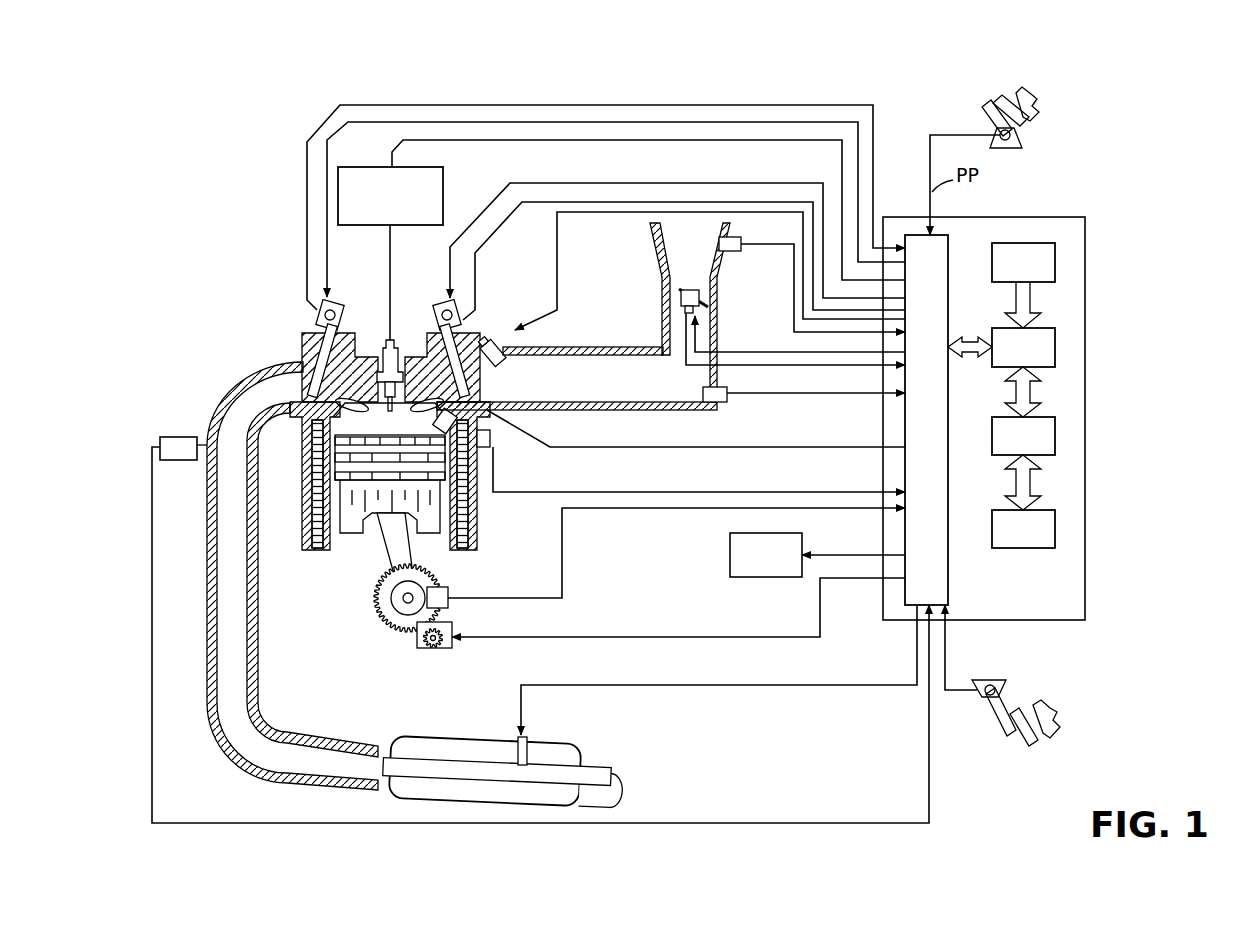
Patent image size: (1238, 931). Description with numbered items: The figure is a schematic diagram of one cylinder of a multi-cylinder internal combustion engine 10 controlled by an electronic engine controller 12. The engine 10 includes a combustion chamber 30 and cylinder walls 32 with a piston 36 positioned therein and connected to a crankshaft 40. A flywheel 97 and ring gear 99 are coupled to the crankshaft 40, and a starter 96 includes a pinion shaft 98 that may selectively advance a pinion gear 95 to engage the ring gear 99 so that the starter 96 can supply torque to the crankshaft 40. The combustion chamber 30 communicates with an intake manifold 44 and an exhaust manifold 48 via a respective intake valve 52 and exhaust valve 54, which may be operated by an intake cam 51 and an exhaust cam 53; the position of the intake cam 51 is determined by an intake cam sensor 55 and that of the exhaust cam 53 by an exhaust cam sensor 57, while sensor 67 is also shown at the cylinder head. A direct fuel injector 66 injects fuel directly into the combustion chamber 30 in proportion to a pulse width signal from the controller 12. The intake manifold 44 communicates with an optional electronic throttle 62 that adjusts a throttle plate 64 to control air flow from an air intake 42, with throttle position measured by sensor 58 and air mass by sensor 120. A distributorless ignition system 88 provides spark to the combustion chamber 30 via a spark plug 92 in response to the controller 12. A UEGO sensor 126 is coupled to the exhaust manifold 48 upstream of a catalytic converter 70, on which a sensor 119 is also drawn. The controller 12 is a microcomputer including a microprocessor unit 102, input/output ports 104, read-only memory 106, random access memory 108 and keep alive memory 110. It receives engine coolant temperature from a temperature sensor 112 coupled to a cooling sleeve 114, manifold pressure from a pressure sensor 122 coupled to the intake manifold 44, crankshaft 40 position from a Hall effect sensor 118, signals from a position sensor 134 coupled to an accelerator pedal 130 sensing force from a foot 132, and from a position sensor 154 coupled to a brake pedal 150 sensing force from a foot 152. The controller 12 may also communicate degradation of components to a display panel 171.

The internal combustion engine 10 is at (338, 324).
The electronic engine controller 12 is at (1077, 215).
The combustion chamber 30 is at (387, 422).
The cylinder walls 32 is at (337, 550).
The piston 36 is at (372, 510).
The crankshaft 40 is at (393, 623).
The air intake 42 is at (701, 267).
The intake manifold 44 is at (642, 394).
The exhaust manifold 48 is at (284, 397).
The intake cam 51 is at (441, 310).
The intake valve 52 is at (433, 387).
The exhaust cam 53 is at (337, 310).
The exhaust valve 54 is at (317, 377).
The intake cam sensor 55 is at (460, 322).
The exhaust cam sensor 57 is at (323, 320).
The throttle position sensor 58 is at (670, 316).
The electronic throttle 62 is at (703, 295).
The throttle plate 64 is at (673, 295).
The direct fuel injector 66 is at (470, 410).
The cylinder pressure sensor 67 is at (508, 332).
The catalytic converter 70 is at (403, 740).
The distributorless ignition system 88 is at (352, 167).
The spark plug 92 is at (391, 333).
The pinion gear 95 is at (442, 652).
The starter 96 is at (450, 648).
The flywheel 97 is at (383, 605).
The pinion shaft 98 is at (430, 650).
The ring gear 99 is at (407, 632).
The microprocessor unit 102 is at (1057, 340).
The input/output ports 104 is at (950, 242).
The read-only memory 106 is at (1057, 260).
The random access memory 108 is at (1057, 430).
The keep alive memory 110 is at (1057, 525).
The temperature sensor 112 is at (492, 442).
The cooling sleeve 114 is at (462, 510).
The Hall effect sensor 118 is at (448, 590).
The temperature sensor 119 is at (528, 742).
The air mass sensor 120 is at (738, 251).
The pressure sensor 122 is at (728, 403).
The Universal Exhaust Gas Oxygen sensor 126 is at (160, 440).
The accelerator pedal 130 is at (987, 113).
The foot 132 is at (1028, 103).
The position sensor 134 is at (1023, 138).
The brake pedal 150 is at (1010, 733).
The foot 152 is at (1047, 700).
The position sensor 154 is at (980, 683).
The display panel 171 is at (817, 555).